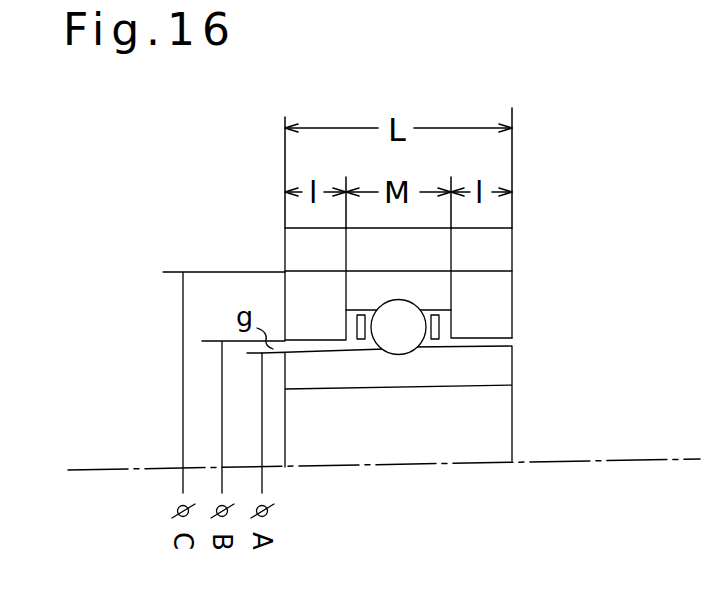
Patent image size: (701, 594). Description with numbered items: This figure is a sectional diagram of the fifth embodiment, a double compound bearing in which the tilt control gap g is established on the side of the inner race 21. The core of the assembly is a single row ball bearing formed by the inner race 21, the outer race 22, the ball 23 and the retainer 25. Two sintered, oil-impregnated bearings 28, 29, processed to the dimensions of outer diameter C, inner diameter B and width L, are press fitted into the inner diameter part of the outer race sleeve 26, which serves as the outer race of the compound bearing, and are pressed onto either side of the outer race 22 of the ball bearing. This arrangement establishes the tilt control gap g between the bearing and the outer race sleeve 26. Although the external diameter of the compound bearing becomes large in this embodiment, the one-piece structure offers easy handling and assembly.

The inner race 21 is at (496, 377).
The outer race 22 is at (423, 288).
The ball 23 is at (404, 337).
The retainer 25 is at (440, 326).
The outer race sleeve 26 is at (318, 247).
The sintered, oil-impregnated bearing 28 is at (317, 308).
The sintered, oil-impregnated bearing 29 is at (488, 288).